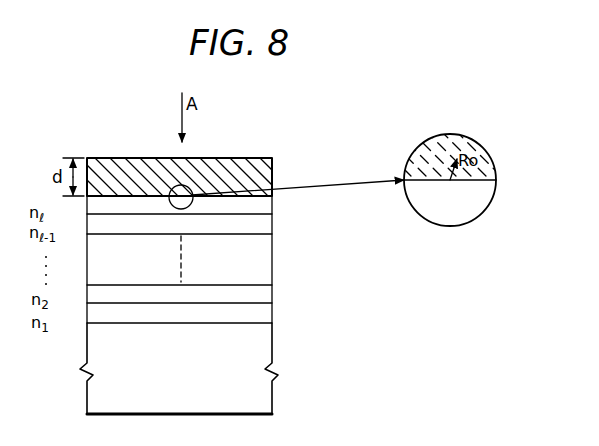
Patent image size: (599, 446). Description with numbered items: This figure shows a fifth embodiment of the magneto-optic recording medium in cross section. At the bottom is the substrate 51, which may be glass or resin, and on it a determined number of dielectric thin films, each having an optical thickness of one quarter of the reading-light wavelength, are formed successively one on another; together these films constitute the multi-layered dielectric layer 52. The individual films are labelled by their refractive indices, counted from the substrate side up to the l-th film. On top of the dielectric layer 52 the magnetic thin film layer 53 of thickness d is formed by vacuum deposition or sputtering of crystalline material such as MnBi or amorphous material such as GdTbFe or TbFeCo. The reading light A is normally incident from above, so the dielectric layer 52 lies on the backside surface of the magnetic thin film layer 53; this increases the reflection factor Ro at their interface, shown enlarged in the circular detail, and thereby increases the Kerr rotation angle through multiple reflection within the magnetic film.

The substrate 51 is at (272, 344).
The multi-layered dielectric layer 52 is at (280, 192).
The magnetic thin film layer 53 is at (273, 173).